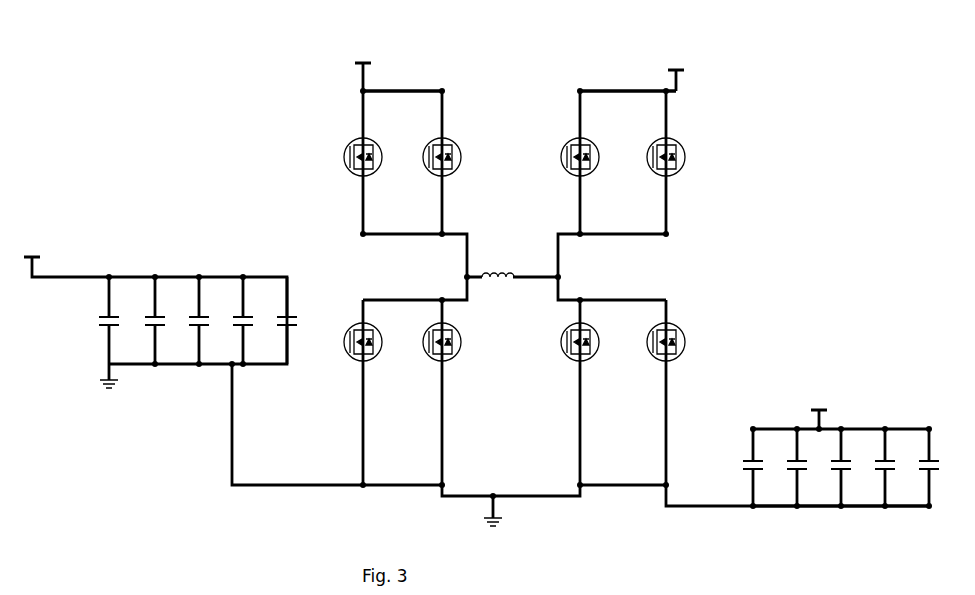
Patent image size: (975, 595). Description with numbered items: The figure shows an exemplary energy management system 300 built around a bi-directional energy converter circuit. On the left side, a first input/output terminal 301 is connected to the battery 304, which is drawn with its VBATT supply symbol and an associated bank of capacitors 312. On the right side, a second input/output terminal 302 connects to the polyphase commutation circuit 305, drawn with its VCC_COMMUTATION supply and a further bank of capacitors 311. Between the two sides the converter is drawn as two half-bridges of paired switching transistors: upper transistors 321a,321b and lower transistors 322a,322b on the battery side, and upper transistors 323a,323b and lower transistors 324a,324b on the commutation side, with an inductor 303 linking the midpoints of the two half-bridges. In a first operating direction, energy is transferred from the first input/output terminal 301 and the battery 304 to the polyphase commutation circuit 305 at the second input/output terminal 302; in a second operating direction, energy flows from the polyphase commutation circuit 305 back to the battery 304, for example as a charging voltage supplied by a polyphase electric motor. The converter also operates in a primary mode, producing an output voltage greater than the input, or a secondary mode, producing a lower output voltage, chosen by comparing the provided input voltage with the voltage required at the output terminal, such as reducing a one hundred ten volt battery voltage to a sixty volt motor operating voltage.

The energy management system 300 is at (147, 87).
The first input/output terminal 301 is at (363, 90).
The second input/output terminal 302 is at (677, 90).
The inductor / motor coil 303 is at (520, 275).
The battery 304 is at (376, 60).
The polyphase commutation circuit 305 is at (620, 62).
The commutation supply capacitor bank 311 is at (857, 428).
The battery supply capacitor bank 312 is at (193, 365).
The upper transistors of first half-bridge 321a,321b is at (430, 138).
The lower transistors of first half-bridge 322a,322b is at (382, 360).
The upper transistors of second half-bridge 323a,323b is at (640, 138).
The lower transistors of second half-bridge 324a,324b is at (642, 323).